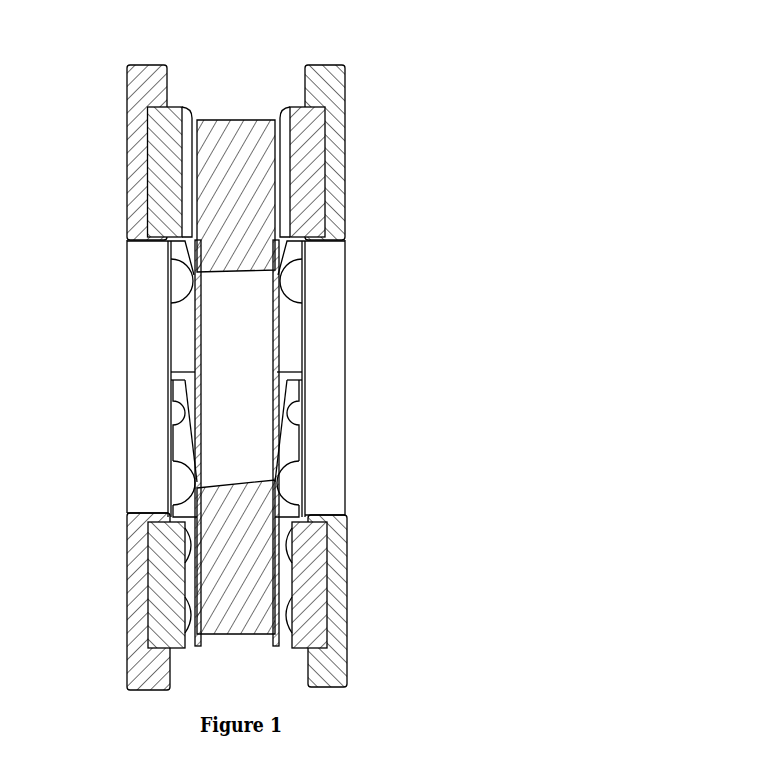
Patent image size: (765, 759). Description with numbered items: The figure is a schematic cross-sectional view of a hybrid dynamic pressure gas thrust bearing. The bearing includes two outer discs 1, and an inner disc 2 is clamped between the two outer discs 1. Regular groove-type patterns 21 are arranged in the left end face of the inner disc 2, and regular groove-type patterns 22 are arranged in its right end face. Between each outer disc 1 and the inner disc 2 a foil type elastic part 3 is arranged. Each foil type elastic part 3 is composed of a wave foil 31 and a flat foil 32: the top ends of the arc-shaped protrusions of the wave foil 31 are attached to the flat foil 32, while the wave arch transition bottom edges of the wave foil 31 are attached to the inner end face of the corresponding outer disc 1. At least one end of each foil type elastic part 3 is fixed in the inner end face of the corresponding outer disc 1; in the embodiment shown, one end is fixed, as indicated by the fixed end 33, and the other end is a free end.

The outer disc 1 is at (262, 345).
The inner disc 2 is at (251, 321).
The regular groove-type patterns 21 is at (124, 433).
The regular groove-type patterns 22 is at (350, 429).
The foil type elastic part 3 is at (235, 411).
The wave foil 31 is at (293, 476).
The flat foil 32 is at (300, 431).
The fixed end 33 is at (292, 343).